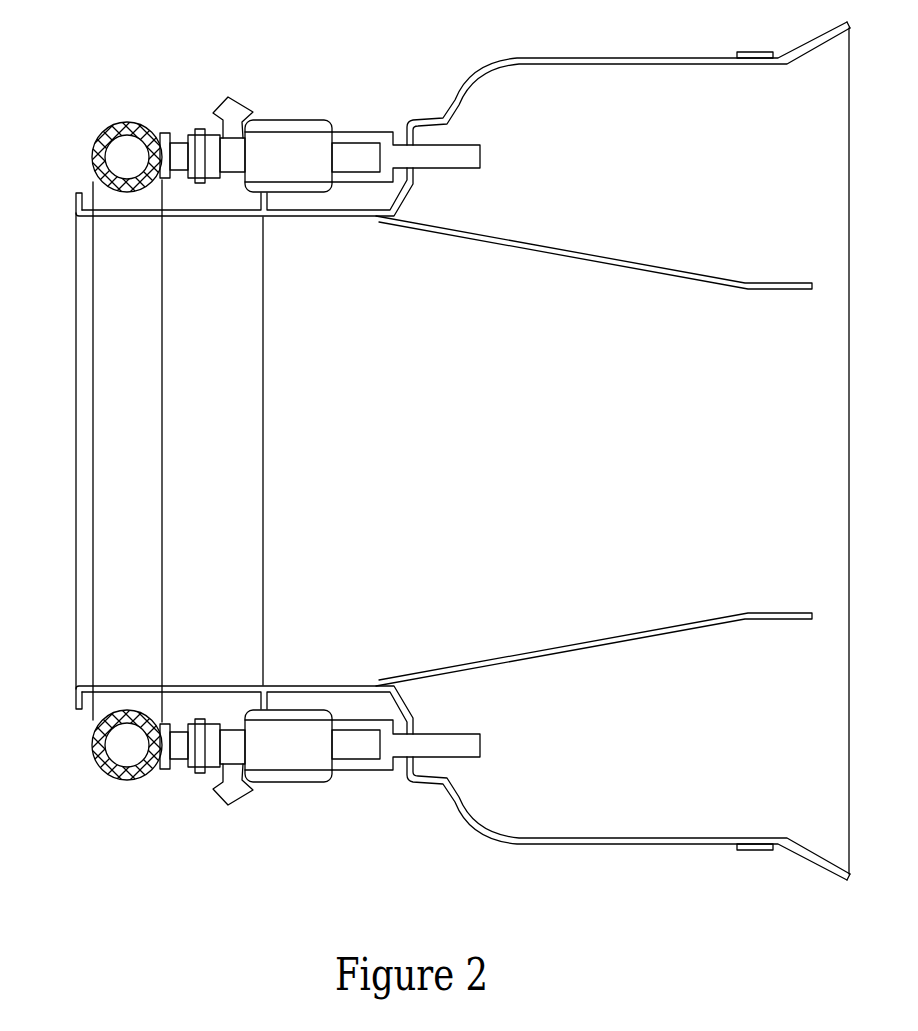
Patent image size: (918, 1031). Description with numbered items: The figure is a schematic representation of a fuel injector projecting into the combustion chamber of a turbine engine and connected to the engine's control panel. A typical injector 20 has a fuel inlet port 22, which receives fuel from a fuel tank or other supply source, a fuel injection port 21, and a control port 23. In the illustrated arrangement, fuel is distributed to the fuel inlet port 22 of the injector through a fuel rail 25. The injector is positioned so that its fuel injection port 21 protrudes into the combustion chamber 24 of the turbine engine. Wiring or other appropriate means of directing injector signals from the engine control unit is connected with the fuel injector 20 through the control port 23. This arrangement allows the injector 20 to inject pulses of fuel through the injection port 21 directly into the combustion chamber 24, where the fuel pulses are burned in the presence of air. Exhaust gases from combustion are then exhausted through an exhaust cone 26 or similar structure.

The fuel injector 20 is at (288, 778).
The fuel injection port 21 is at (460, 750).
The fuel inlet port 22 is at (170, 764).
The control port 23 is at (217, 803).
The combustion chamber 24 is at (620, 818).
The fuel rail 25 is at (117, 603).
The exhaust cone 26 is at (76, 434).